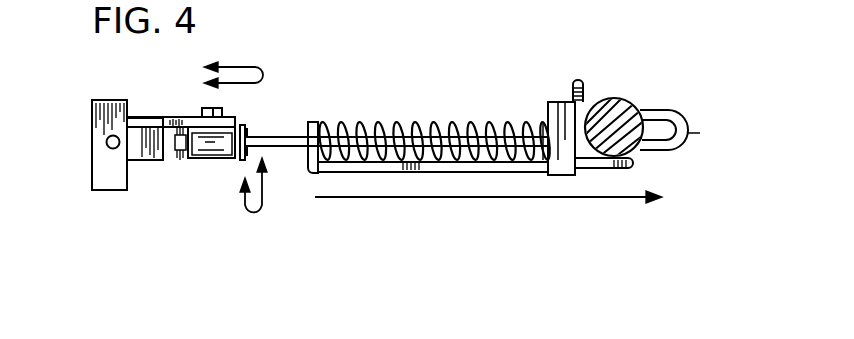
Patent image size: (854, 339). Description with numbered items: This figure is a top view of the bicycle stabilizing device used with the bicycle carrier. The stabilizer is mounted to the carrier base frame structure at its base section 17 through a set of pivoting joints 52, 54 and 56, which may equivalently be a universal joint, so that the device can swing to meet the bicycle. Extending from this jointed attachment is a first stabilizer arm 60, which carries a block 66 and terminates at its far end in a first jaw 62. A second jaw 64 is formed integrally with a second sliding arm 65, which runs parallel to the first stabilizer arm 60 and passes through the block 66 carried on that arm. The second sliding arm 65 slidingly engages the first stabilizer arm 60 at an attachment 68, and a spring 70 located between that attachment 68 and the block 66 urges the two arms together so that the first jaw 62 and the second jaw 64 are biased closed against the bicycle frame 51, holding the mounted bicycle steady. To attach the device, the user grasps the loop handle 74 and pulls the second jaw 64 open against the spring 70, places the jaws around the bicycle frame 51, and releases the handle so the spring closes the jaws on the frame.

The base section 17 is at (104, 183).
The pivoting joint 56 is at (108, 143).
The pivoting joint 54 is at (206, 109).
The pivoting joint 52 is at (226, 145).
The first stabilizer arm 60 is at (276, 134).
The attachment 68 is at (304, 163).
The second sliding arm 65 is at (475, 166).
The spring 70 is at (402, 121).
The block 66 is at (558, 102).
The first jaw 62 is at (578, 82).
The bicycle frame 51 is at (612, 98).
The second jaw 64 is at (652, 102).
The loop handle 74 is at (700, 133).